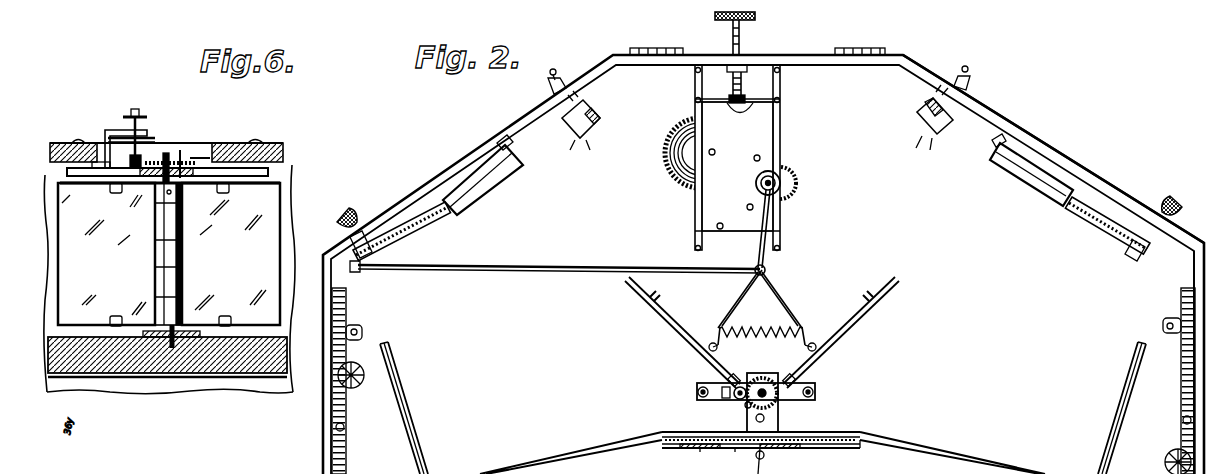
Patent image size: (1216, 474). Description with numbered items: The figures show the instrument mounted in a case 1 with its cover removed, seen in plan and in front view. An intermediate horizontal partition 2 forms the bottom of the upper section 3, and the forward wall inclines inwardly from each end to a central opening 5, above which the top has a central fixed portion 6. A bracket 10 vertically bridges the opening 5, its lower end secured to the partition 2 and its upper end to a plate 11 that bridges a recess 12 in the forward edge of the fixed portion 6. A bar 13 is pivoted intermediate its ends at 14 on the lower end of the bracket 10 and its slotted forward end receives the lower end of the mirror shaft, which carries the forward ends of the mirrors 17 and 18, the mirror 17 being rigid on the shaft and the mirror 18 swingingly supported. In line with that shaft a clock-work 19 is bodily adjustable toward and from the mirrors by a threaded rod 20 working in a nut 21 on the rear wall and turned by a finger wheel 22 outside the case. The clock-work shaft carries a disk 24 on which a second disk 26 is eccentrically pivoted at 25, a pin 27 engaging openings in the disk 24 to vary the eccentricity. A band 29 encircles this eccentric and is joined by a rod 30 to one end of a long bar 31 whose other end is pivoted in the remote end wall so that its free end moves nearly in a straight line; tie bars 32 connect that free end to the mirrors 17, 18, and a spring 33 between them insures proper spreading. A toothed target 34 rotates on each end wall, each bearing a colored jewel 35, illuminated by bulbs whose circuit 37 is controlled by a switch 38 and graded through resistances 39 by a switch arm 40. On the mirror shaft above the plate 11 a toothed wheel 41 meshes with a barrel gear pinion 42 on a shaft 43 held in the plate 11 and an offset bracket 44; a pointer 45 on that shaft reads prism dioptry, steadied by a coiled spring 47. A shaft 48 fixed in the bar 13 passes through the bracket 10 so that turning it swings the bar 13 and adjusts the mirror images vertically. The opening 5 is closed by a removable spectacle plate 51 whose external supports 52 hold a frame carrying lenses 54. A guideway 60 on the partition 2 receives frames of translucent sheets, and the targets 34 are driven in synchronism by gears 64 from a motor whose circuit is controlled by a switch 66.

In FIG. 2, the case 1 is at (1050, 152).
In FIG. 6, the intermediate horizontal partition 2 is at (238, 378).
In FIG. 2, the intermediate horizontal partition 2 is at (975, 128).
In FIG. 6, the upper section 3 is at (275, 176).
In FIG. 2, the upper section 3 is at (1192, 240).
In FIG. 2, the central opening 5 is at (870, 432).
In FIG. 6, the central fixed portion 6 is at (268, 143).
In FIG. 6, the bracket 10 is at (182, 178).
In FIG. 2, the bracket 10 is at (780, 408).
In FIG. 6, the plate 11 is at (200, 160).
In FIG. 2, the plate 11 is at (815, 392).
In FIG. 6, the recess 12 is at (97, 143).
In FIG. 6, the bar 13 is at (170, 163).
In FIG. 6, the pivot 14 is at (162, 325).
In FIG. 6, the mirror 17 is at (106, 254).
In FIG. 2, the mirror 17 is at (680, 335).
In FIG. 6, the mirror 18 is at (231, 254).
In FIG. 2, the mirror 18 is at (835, 335).
In FIG. 2, the clock-work 19 is at (785, 125).
In FIG. 2, the threaded rod 20 is at (740, 42).
In FIG. 2, the nut 21 is at (748, 78).
In FIG. 2, the finger wheel 22 is at (720, 20).
In FIG. 2, the disk 24 is at (780, 178).
In FIG. 2, the eccentric pivot 25 is at (762, 187).
In FIG. 2, the second disk 26 is at (760, 176).
In FIG. 2, the pin 27 is at (780, 186).
In FIG. 2, the band 29 is at (795, 183).
In FIG. 2, the rod 30 is at (764, 212).
In FIG. 2, the bar 31 is at (575, 272).
In FIG. 2, the tie bars 32 is at (755, 282).
In FIG. 2, the spring 33 is at (792, 320).
In FIG. 2, the target 34 is at (346, 440).
In FIG. 2, the jewel 35 is at (358, 375).
In FIG. 2, the circuit 37 is at (390, 470).
In FIG. 2, the switch 38 is at (603, 118).
In FIG. 2, the selective resistance 39 is at (505, 185).
In FIG. 2, the switch arm 40 is at (430, 228).
In FIG. 6, the toothed wheel 41 is at (172, 160).
In FIG. 2, the toothed wheel 41 is at (762, 378).
In FIG. 6, the barrel gear pinion 42 is at (115, 178).
In FIG. 2, the barrel gear pinion 42 is at (748, 405).
In FIG. 6, the shaft 43 is at (138, 125).
In FIG. 2, the shaft 43 is at (736, 388).
In FIG. 6, the offset bracket 44 is at (108, 130).
In FIG. 2, the offset bracket 44 is at (724, 398).
In FIG. 6, the pointer 45 is at (138, 109).
In FIG. 6, the spring 47 is at (150, 140).
In FIG. 2, the shaft 48 is at (785, 448).
In FIG. 2, the spectacle plate 51 is at (835, 450).
In FIG. 2, the external supports 52 is at (718, 450).
In FIG. 2, the lenses 54 is at (750, 450).
In FIG. 2, the guideway 60 is at (412, 420).
In FIG. 2, the gear 64 is at (835, 432).
In FIG. 2, the switch 66 is at (565, 78).